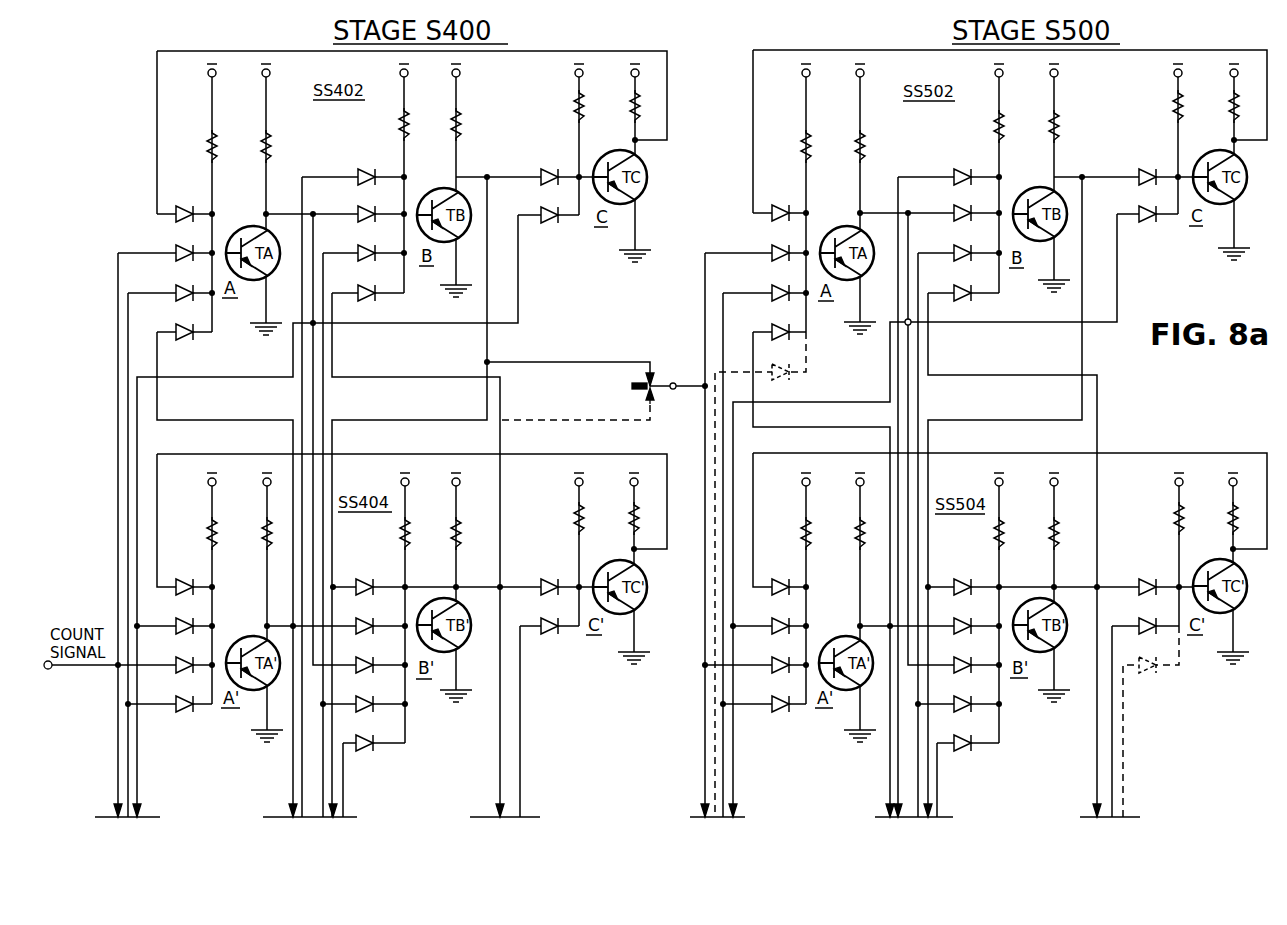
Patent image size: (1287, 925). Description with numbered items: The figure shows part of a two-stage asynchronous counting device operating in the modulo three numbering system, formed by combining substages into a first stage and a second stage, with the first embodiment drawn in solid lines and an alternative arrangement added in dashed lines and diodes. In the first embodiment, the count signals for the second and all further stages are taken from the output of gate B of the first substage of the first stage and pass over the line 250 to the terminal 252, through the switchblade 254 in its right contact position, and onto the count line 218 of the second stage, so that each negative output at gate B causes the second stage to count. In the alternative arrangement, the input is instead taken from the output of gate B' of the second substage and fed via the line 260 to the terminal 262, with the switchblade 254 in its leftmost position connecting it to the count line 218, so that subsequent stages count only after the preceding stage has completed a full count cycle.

The line 250 is at (577, 362).
The terminal 252 is at (654, 378).
The switchblade 254 is at (633, 391).
The line 260 is at (580, 420).
The terminal 262 is at (652, 402).
The count line 218 is at (690, 388).